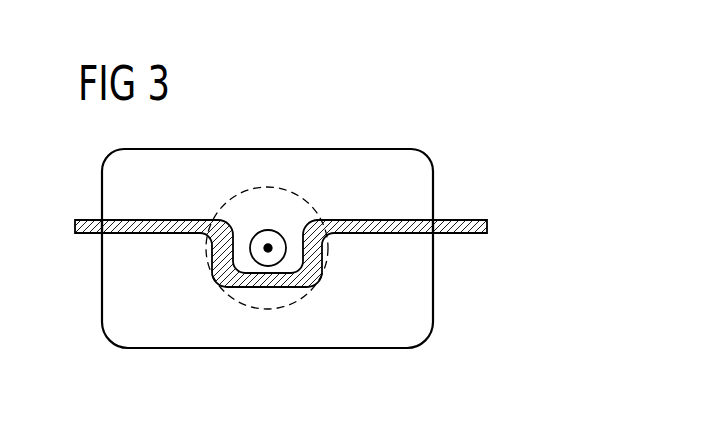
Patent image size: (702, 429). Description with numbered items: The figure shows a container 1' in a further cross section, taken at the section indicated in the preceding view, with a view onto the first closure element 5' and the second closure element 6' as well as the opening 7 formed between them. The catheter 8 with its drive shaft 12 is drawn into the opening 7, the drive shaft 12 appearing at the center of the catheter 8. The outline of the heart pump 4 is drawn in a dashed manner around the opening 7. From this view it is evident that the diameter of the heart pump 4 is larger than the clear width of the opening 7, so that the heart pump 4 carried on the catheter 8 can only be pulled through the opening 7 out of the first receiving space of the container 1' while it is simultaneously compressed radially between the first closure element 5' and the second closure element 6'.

The device assembly 1' is at (517, 165).
The heart pump 4 is at (300, 193).
The first closure element 5' is at (300, 284).
The second closure element 6' is at (267, 160).
The opening 7 is at (240, 232).
The catheter 8 is at (256, 262).
The drive shaft 12 is at (270, 249).